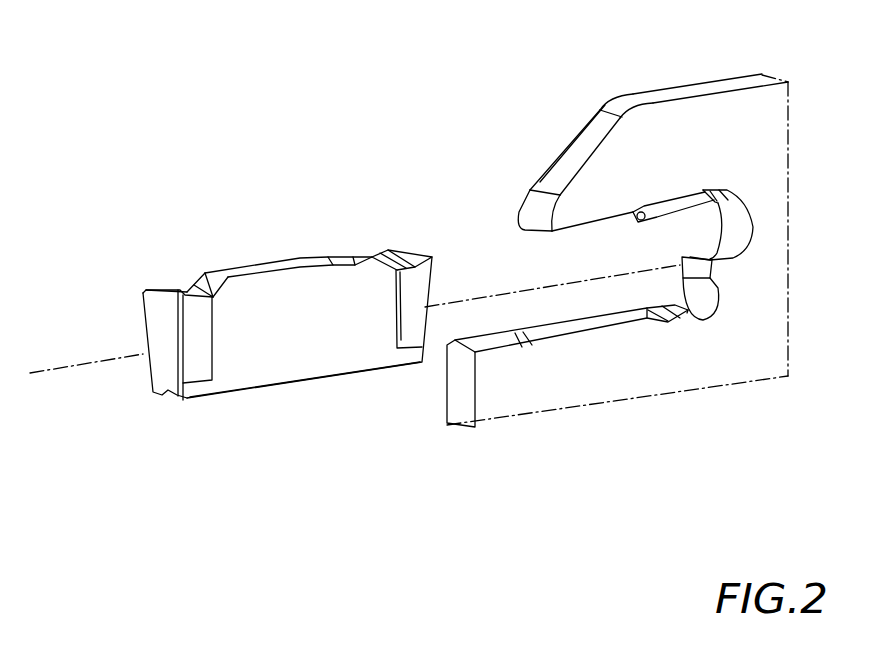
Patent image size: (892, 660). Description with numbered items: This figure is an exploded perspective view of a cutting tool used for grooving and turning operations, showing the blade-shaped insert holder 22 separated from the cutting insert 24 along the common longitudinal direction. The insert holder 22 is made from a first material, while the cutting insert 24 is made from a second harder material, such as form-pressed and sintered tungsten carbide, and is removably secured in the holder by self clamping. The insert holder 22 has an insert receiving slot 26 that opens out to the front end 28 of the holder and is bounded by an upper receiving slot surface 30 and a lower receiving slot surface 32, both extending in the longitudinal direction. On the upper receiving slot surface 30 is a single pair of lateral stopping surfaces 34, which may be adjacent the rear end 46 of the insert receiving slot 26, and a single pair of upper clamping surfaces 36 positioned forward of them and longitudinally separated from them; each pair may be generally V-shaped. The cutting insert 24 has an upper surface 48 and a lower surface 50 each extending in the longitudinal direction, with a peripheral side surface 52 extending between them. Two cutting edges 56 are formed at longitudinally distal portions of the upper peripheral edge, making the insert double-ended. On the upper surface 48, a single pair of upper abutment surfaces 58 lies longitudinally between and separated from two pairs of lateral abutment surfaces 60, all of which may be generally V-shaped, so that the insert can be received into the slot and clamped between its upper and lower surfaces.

The insert holder 22 is at (441, 271).
The cutting insert 24 is at (254, 320).
The insert receiving slot 26 is at (533, 276).
The front end 28 is at (542, 395).
The upper receiving slot surface 30 is at (636, 243).
The lower receiving slot surface 32 is at (591, 314).
The lateral stopping surfaces 34 is at (618, 140).
The upper clamping surfaces 36 is at (637, 225).
The rear end 46 is at (699, 268).
The upper surface 48 is at (262, 271).
The lower surface 50 is at (277, 389).
The peripheral side surface 52 is at (299, 348).
The cutting edges 56 is at (143, 299).
The upper abutment surfaces 58 is at (287, 264).
The lateral abutment surfaces 60 is at (207, 281).